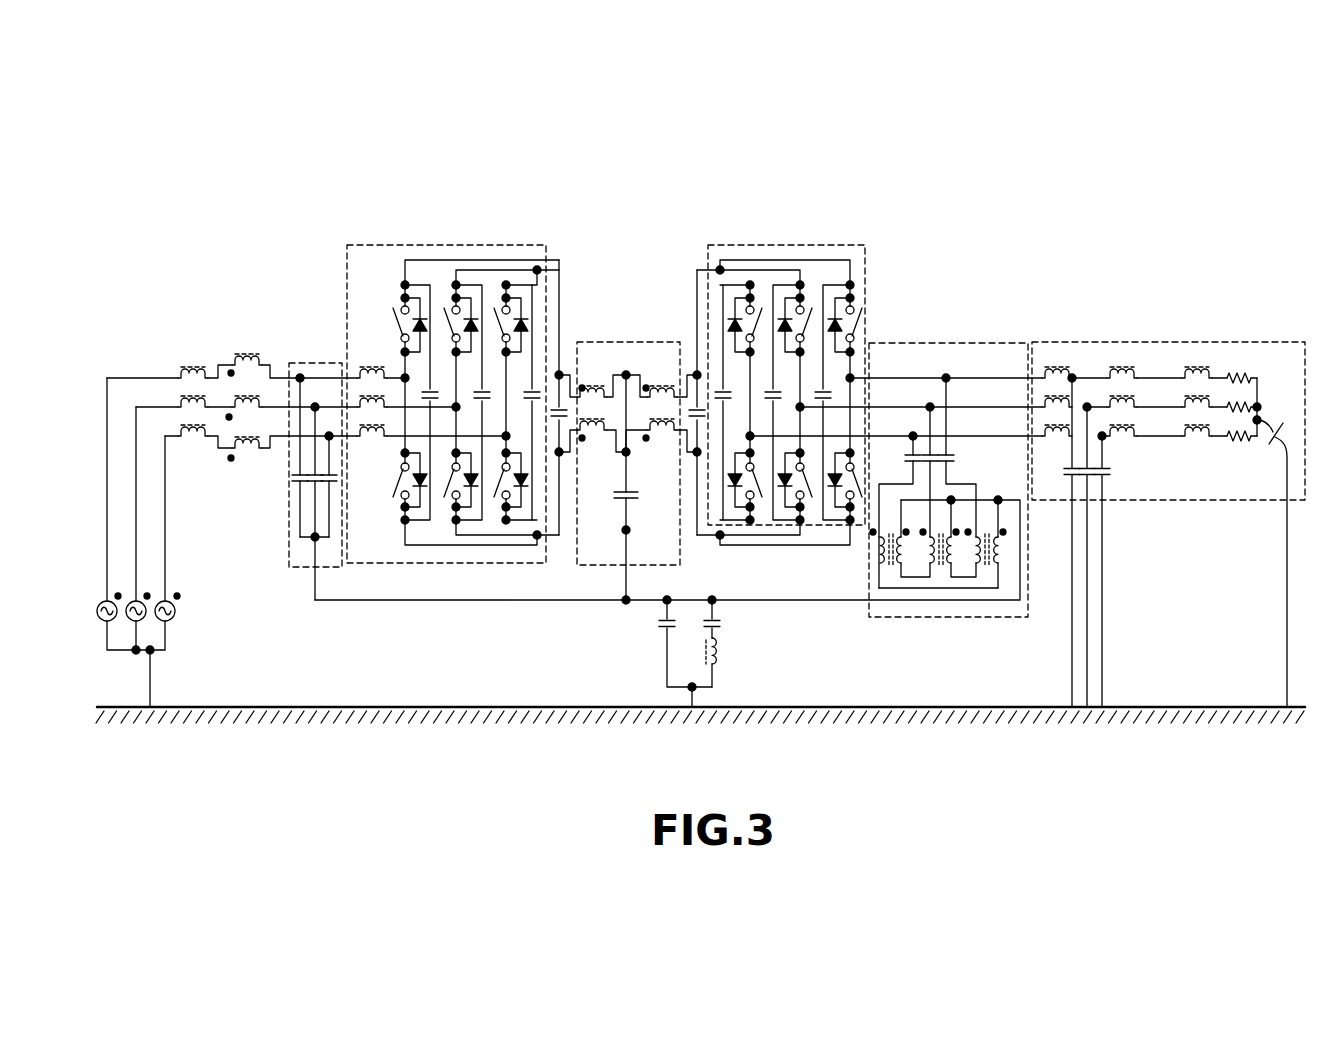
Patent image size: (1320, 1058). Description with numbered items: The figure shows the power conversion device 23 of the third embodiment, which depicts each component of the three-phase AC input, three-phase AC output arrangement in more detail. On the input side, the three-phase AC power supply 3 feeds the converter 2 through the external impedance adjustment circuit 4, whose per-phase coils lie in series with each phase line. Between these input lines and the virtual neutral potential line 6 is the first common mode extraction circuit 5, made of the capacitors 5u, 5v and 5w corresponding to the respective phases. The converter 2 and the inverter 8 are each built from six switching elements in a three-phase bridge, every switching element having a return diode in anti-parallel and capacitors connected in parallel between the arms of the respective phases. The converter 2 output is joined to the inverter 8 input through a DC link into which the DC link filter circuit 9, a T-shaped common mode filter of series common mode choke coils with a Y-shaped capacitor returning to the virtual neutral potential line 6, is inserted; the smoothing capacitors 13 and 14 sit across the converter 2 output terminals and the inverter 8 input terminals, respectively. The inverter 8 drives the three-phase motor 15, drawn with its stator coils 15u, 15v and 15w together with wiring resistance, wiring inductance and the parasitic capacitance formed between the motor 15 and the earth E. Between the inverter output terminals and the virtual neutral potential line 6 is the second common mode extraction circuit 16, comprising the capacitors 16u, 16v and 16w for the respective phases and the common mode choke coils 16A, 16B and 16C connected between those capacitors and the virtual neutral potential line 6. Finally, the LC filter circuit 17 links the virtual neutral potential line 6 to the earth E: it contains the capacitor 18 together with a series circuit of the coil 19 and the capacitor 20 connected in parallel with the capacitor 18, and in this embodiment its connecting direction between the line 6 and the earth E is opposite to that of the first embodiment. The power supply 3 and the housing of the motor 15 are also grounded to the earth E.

The converter 2 is at (443, 245).
The three-phase AC power supply 3 is at (183, 613).
The external impedance adjustment circuit 4 is at (212, 356).
The first common mode extraction circuit 5 is at (290, 446).
The capacitor 5u is at (298, 478).
The capacitor 5v is at (310, 485).
The capacitor 5w is at (328, 490).
The virtual neutral potential line 6 is at (567, 605).
The inverter 8 is at (788, 245).
The DC link filter circuit 9 is at (620, 342).
The smoothing capacitor 13 is at (557, 403).
The smoothing capacitor 14 is at (693, 407).
The three-phase motor 15 is at (1169, 490).
The stator coil 15u is at (1218, 365).
The stator coil 15v is at (1219, 397).
The stator coil 15w is at (1216, 446).
The second common mode extraction circuit 16 is at (945, 464).
The capacitor 16u is at (903, 452).
The capacitor 16v is at (933, 464).
The capacitor 16w is at (960, 456).
The common mode choke coil 16A is at (891, 572).
The common mode choke coil 16B is at (941, 572).
The common mode choke coil 16C is at (988, 572).
The LC filter circuit 17 is at (761, 643).
The capacitor 18 is at (658, 629).
The coil 19 is at (720, 662).
The capacitor 20 is at (726, 627).
The power conversion device 23 is at (848, 180).
The earth E is at (220, 705).